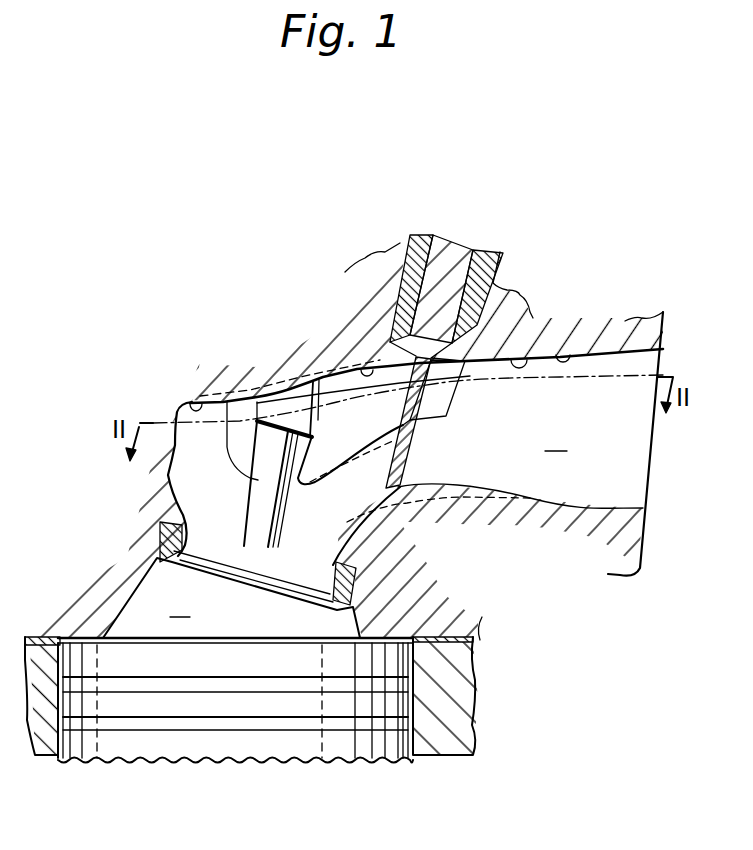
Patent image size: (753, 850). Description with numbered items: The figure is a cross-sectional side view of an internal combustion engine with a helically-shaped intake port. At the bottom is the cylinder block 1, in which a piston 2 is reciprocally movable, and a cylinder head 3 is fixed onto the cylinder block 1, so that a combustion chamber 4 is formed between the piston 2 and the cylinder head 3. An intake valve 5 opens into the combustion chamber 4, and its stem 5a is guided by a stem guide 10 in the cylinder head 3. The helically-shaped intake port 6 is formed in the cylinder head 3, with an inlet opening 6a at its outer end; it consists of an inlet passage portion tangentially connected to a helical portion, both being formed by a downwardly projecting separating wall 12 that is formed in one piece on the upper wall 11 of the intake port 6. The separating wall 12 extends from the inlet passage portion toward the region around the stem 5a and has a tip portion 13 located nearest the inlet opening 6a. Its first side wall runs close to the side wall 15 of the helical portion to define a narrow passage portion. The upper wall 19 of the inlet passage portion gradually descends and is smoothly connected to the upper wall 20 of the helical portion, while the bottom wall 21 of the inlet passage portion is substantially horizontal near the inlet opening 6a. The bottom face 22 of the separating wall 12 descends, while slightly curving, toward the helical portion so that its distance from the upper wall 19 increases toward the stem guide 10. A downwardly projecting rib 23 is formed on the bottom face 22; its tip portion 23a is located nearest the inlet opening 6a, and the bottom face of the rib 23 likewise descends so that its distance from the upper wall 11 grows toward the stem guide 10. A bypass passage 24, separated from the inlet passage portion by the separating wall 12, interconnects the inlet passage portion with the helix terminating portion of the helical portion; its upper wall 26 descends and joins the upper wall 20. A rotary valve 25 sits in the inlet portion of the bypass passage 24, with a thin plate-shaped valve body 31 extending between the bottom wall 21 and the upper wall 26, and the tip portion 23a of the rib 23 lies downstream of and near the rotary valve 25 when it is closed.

The cylinder block 1 is at (455, 675).
The piston 2 is at (384, 748).
The cylinder head 3 is at (617, 330).
The combustion chamber 4 is at (231, 598).
The intake valve 5 is at (234, 556).
The stem 5a is at (279, 540).
The helically-shaped intake port 6 is at (520, 465).
The inlet opening 6a is at (645, 465).
The stem guide 10 is at (290, 388).
The upper wall 11 is at (529, 352).
The separating wall 12 is at (330, 445).
The tip portion 13 is at (455, 394).
The side wall 15 is at (165, 462).
The upper wall 19 is at (568, 350).
The upper wall 20 is at (192, 400).
The bottom wall 21 is at (488, 487).
The bottom face 22 is at (437, 416).
The rib 23 is at (358, 447).
The tip portion 23a is at (274, 531).
The bypass passage 24 is at (323, 402).
The rotary valve 25 is at (410, 458).
The upper wall 26 is at (356, 404).
The valve body 31 is at (405, 478).